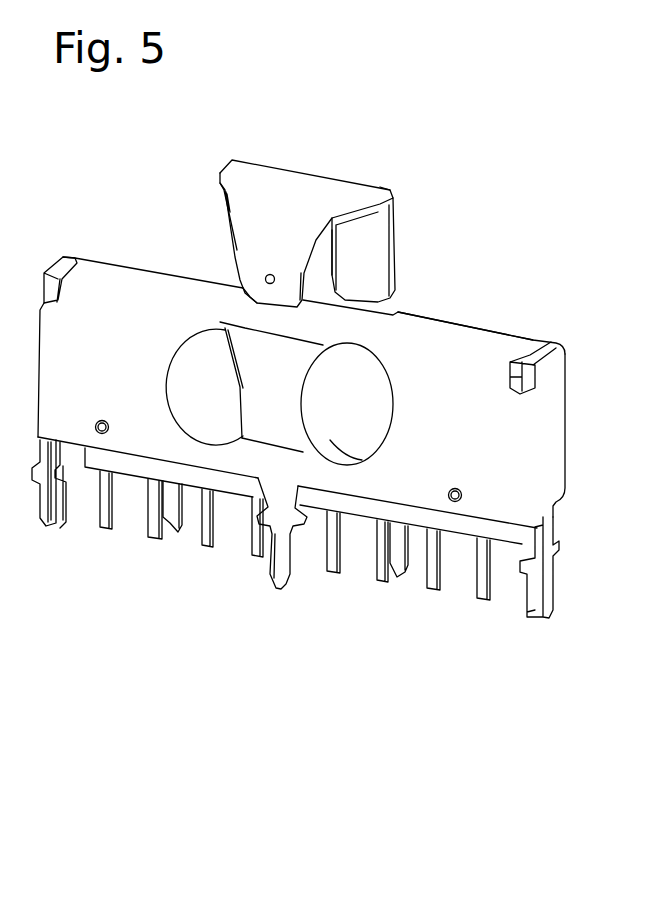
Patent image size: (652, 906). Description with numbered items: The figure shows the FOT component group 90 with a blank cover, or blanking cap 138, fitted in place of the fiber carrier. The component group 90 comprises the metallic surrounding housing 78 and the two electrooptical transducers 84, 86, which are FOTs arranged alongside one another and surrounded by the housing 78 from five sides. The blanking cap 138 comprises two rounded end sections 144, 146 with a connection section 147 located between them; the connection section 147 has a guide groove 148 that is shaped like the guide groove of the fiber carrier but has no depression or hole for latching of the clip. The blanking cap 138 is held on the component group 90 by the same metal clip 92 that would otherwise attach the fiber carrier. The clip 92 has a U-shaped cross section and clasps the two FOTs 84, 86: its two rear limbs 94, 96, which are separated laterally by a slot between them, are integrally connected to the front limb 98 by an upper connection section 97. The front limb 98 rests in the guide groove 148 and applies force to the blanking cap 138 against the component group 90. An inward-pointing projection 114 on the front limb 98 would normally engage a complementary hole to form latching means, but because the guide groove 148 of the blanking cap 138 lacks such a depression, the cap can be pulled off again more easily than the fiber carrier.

The surrounding housing 78 is at (550, 449).
The electrooptical transducer 84 is at (455, 525).
The electrooptical transducer 86 is at (130, 460).
The FOT component group 90 is at (493, 328).
The clip 92 is at (397, 215).
The rear limb 94 is at (377, 267).
The rear limb 96 is at (267, 252).
The upper connection section 97 is at (393, 190).
The front limb 98 is at (240, 250).
The projection 114 is at (265, 278).
The blanking cap 138 is at (393, 413).
The rounded end section 144 is at (367, 432).
The rounded end section 146 is at (182, 398).
The connection section 147 is at (280, 348).
The guide groove 148 is at (272, 397).